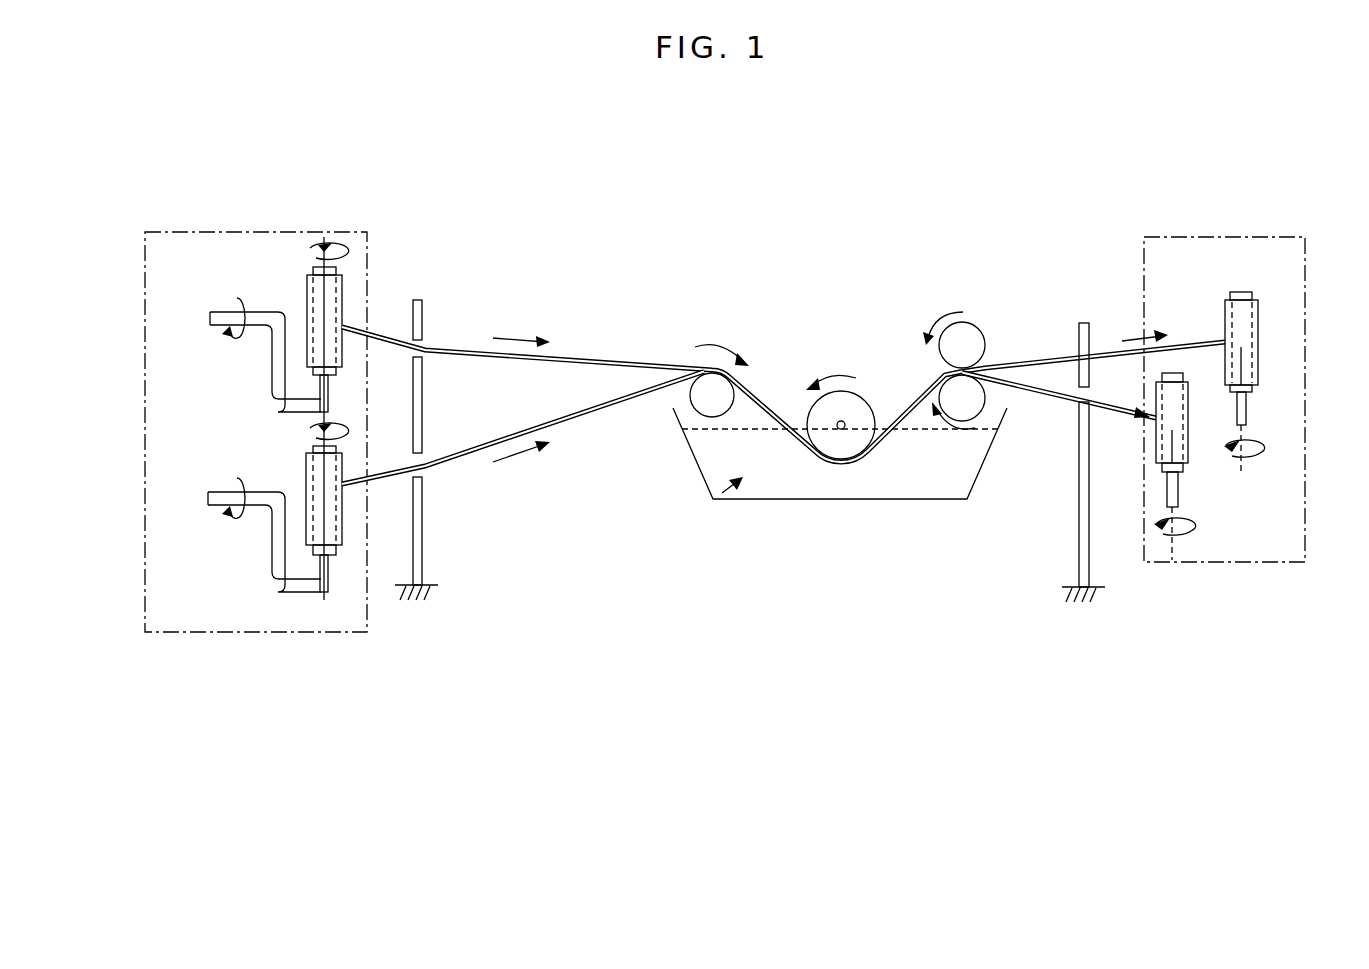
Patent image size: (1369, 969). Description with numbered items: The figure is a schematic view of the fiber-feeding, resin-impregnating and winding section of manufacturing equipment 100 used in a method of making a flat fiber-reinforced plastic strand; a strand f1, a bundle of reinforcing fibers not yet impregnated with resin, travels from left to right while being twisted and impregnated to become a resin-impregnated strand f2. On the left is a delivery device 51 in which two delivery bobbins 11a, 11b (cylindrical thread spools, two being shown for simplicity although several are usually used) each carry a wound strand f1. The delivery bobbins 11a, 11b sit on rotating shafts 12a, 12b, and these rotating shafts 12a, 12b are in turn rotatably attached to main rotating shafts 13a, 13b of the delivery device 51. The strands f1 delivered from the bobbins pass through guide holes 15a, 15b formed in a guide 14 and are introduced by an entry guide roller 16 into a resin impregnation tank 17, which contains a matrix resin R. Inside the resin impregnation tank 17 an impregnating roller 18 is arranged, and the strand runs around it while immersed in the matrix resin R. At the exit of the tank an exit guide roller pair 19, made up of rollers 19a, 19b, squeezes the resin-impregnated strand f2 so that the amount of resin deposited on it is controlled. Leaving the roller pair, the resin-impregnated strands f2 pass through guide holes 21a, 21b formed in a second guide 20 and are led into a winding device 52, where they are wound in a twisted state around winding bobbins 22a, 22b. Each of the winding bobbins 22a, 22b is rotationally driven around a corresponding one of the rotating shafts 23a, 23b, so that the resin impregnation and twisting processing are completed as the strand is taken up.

The manufacturing equipment 100 is at (808, 216).
The delivery device 51 is at (197, 232).
The winding device 52 is at (1250, 237).
The delivery bobbin 11a is at (342, 294).
The delivery bobbin 11b is at (342, 520).
The rotating shaft 12a is at (328, 393).
The rotating shaft 12b is at (330, 580).
The main rotating shaft 13a is at (257, 318).
The main rotating shaft 13b is at (257, 495).
The guide 14 is at (420, 310).
The guide hole 15a is at (430, 346).
The guide hole 15b is at (424, 470).
The strand f1 is at (590, 466).
The entry guide roller 16 is at (700, 402).
The resin impregnation tank 17 is at (833, 500).
The matrix resin R is at (723, 502).
The impregnating roller 18 is at (853, 405).
The exit guide roller pair 19 is at (981, 370).
The exit guide roller 19a is at (966, 340).
The exit guide roller 19b is at (968, 402).
The resin-impregnated strand f2 is at (1040, 436).
The guide 20 is at (1084, 322).
The guide hole 21a is at (1090, 354).
The guide hole 21b is at (1095, 406).
The winding bobbin 22a is at (1258, 330).
The winding bobbin 22b is at (1188, 442).
The rotating shaft 23a is at (1247, 406).
The rotating shaft 23b is at (1180, 490).